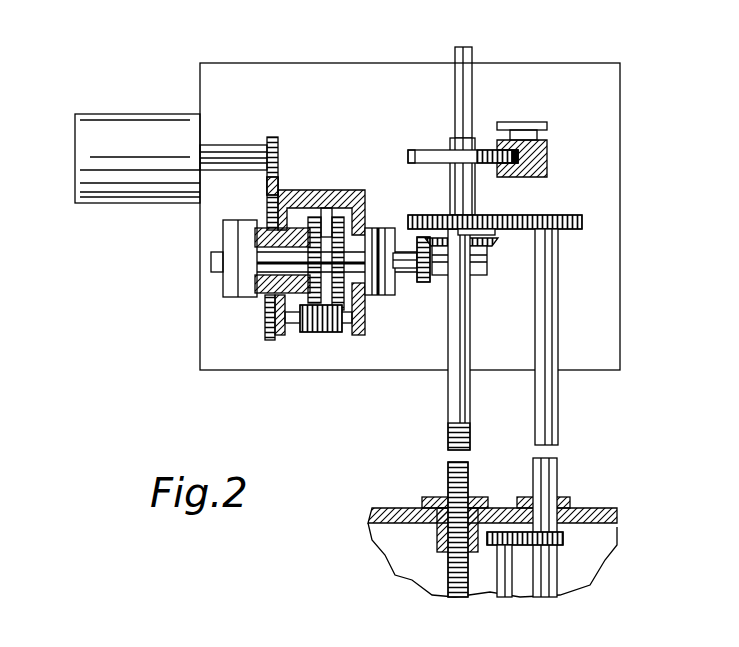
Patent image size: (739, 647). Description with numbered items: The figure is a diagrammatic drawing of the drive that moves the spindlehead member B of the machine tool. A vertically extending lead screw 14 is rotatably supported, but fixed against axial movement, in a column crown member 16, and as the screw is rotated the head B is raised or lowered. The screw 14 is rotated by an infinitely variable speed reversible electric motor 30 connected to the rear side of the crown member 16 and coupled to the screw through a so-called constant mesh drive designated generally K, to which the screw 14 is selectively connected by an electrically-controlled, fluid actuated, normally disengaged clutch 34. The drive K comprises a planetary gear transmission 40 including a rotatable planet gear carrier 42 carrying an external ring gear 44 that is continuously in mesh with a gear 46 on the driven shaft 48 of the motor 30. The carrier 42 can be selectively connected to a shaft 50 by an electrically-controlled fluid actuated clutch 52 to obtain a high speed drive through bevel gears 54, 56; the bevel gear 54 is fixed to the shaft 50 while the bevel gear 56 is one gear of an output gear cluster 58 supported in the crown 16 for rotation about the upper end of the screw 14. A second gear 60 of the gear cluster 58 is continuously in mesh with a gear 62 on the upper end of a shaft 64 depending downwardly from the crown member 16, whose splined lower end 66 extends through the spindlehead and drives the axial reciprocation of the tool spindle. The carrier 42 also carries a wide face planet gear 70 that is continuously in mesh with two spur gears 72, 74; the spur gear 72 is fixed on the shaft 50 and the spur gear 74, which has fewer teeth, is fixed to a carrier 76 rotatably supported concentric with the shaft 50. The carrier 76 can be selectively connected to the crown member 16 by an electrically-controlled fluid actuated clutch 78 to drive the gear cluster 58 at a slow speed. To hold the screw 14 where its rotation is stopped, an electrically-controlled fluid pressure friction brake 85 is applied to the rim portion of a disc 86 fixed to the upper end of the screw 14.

The lead screw 14 is at (448, 407).
The column crown member 16 is at (620, 150).
The electric motor 30 is at (128, 118).
The clutch 34 is at (480, 277).
The planetary gear transmission 40 is at (330, 335).
The planet gear carrier 42 is at (292, 190).
The external ring gear 44 is at (265, 333).
The gear 46 is at (279, 137).
The driven shaft 48 is at (253, 147).
The shaft 50 is at (404, 275).
The clutch 52 is at (388, 223).
The bevel gear 54 is at (420, 283).
The bevel gear 56 is at (490, 247).
The output gear cluster 58 is at (503, 194).
The second gear 60 is at (442, 213).
The gear 62 is at (585, 198).
The shaft 64 is at (560, 315).
The lower end of shaft 66 is at (557, 482).
The wide face planet gear 70 is at (322, 332).
The spur gear 72 is at (365, 300).
The spur gear 74 is at (313, 213).
The carrier 76 is at (262, 296).
The clutch 78 is at (233, 220).
The friction brake 85 is at (547, 167).
The disc 86 is at (432, 152).
The constant mesh drive K is at (348, 178).
The spindlehead member B is at (380, 551).